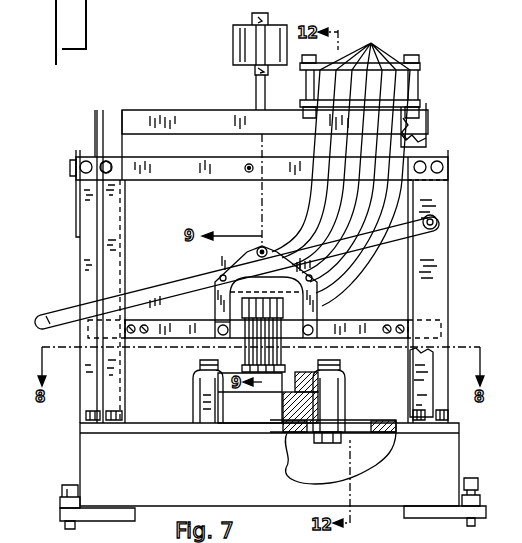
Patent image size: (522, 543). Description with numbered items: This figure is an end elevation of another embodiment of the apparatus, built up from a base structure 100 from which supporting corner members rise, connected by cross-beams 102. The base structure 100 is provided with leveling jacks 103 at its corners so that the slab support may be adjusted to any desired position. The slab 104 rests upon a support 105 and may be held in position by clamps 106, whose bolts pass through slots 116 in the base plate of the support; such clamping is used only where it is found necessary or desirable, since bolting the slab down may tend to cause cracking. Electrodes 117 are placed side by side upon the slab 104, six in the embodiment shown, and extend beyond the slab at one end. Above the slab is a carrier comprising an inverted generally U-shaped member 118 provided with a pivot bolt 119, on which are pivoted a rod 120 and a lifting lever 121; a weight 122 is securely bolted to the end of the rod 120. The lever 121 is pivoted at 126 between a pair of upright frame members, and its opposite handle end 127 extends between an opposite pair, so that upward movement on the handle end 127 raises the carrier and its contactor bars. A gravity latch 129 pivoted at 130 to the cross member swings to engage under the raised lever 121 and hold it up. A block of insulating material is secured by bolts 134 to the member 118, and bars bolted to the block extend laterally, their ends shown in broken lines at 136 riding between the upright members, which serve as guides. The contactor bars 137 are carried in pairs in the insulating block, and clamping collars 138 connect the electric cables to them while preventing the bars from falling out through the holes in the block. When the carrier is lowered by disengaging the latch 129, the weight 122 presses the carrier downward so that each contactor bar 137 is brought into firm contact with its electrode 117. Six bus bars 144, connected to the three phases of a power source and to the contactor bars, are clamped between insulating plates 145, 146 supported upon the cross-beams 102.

The base structure 100 is at (452, 455).
The cross-beams 102 is at (158, 118).
The leveling jacks 103 is at (478, 488).
The slab 104 is at (301, 376).
The support 105 is at (251, 415).
The clamps 106 is at (346, 388).
The slots 116 is at (357, 424).
The electrodes 117 is at (295, 392).
The inverted generally U-shaped member 118 is at (320, 300).
The pivot bolt 119 is at (266, 248).
The rod 120 is at (260, 210).
The lifting lever 121 is at (167, 257).
The weight 122 is at (233, 42).
The lever pivot 126 is at (437, 223).
The handle end 127 is at (48, 315).
The gravity latch 129 is at (76, 200).
The latch pivot 130 is at (70, 167).
The bolts 134 is at (315, 330).
The bar ends 136 is at (443, 309).
The contactor bars 137 is at (250, 360).
The clamping collars 138 is at (222, 322).
The bus bars 144 is at (341, 166).
The insulating plate 145 is at (422, 64).
The insulating plate 146 is at (426, 102).